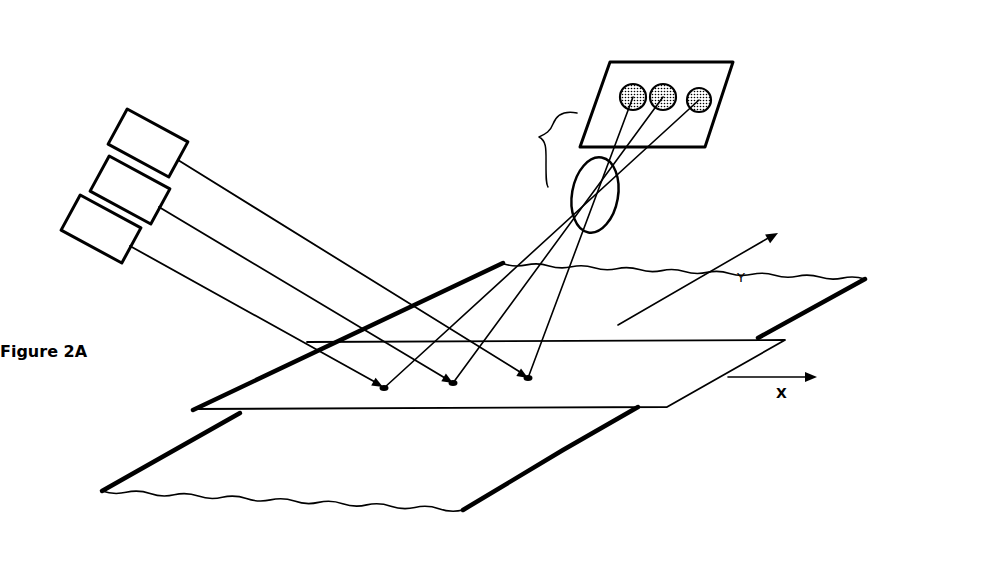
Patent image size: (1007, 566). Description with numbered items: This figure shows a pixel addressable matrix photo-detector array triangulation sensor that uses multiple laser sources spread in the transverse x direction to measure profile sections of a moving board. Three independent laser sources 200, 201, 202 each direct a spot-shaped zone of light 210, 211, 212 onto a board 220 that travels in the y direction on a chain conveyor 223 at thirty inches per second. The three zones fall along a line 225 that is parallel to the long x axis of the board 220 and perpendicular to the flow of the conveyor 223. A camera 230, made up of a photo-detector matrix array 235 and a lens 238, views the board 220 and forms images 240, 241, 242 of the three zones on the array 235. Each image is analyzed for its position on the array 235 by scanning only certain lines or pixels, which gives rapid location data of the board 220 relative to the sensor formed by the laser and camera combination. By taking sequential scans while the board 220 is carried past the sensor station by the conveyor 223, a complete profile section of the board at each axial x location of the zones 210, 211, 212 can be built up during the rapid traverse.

The laser source 200 is at (222, 291).
The laser source 201 is at (271, 269).
The laser source 202 is at (318, 243).
The zone of light 210 is at (388, 392).
The zone of light 211 is at (452, 388).
The zone of light 212 is at (521, 386).
The board 220 is at (680, 400).
The chain conveyor 223 is at (166, 493).
The line 225 is at (634, 378).
The camera 230 is at (543, 149).
The photo-detector matrix array 235 is at (735, 70).
The lens 238 is at (619, 198).
The image 240 is at (705, 76).
The image 241 is at (670, 77).
The image 242 is at (638, 72).